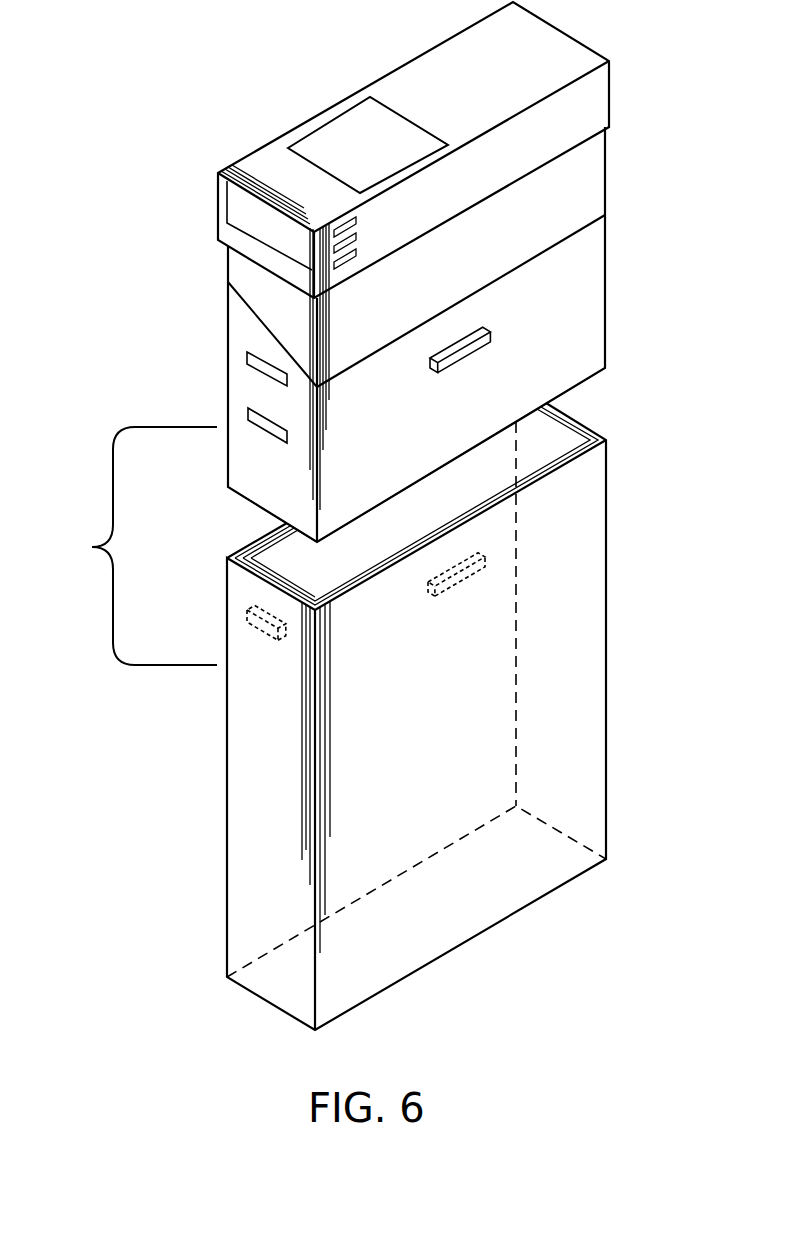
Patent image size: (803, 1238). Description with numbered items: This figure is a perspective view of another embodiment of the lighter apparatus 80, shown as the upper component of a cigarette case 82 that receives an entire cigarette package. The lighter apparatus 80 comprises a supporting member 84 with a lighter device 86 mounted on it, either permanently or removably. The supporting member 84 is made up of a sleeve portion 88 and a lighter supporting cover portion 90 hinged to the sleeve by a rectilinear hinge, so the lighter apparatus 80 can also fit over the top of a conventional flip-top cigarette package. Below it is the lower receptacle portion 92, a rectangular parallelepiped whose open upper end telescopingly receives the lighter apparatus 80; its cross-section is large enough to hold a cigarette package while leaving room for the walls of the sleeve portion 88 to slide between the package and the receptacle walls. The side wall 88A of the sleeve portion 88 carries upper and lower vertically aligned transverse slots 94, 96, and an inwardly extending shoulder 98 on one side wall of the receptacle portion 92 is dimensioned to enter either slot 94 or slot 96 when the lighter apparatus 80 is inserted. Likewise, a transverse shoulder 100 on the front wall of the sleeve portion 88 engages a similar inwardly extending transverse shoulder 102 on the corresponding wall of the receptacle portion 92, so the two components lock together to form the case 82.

The lighter apparatus 80 is at (608, 218).
The cigarette case 82 is at (139, 546).
The supporting member 84 is at (608, 277).
The lighter device 86 is at (613, 89).
The sleeve portion 88 is at (587, 340).
The side wall 88A is at (235, 383).
The lighter supporting cover portion 90 is at (595, 177).
The lower receptacle portion 92 is at (610, 623).
The upper transverse slot 94 is at (243, 357).
The lower transverse slot 96 is at (243, 415).
The shoulder 98 is at (243, 618).
The transverse shoulder 100 is at (459, 367).
The transverse shoulder 102 is at (448, 597).